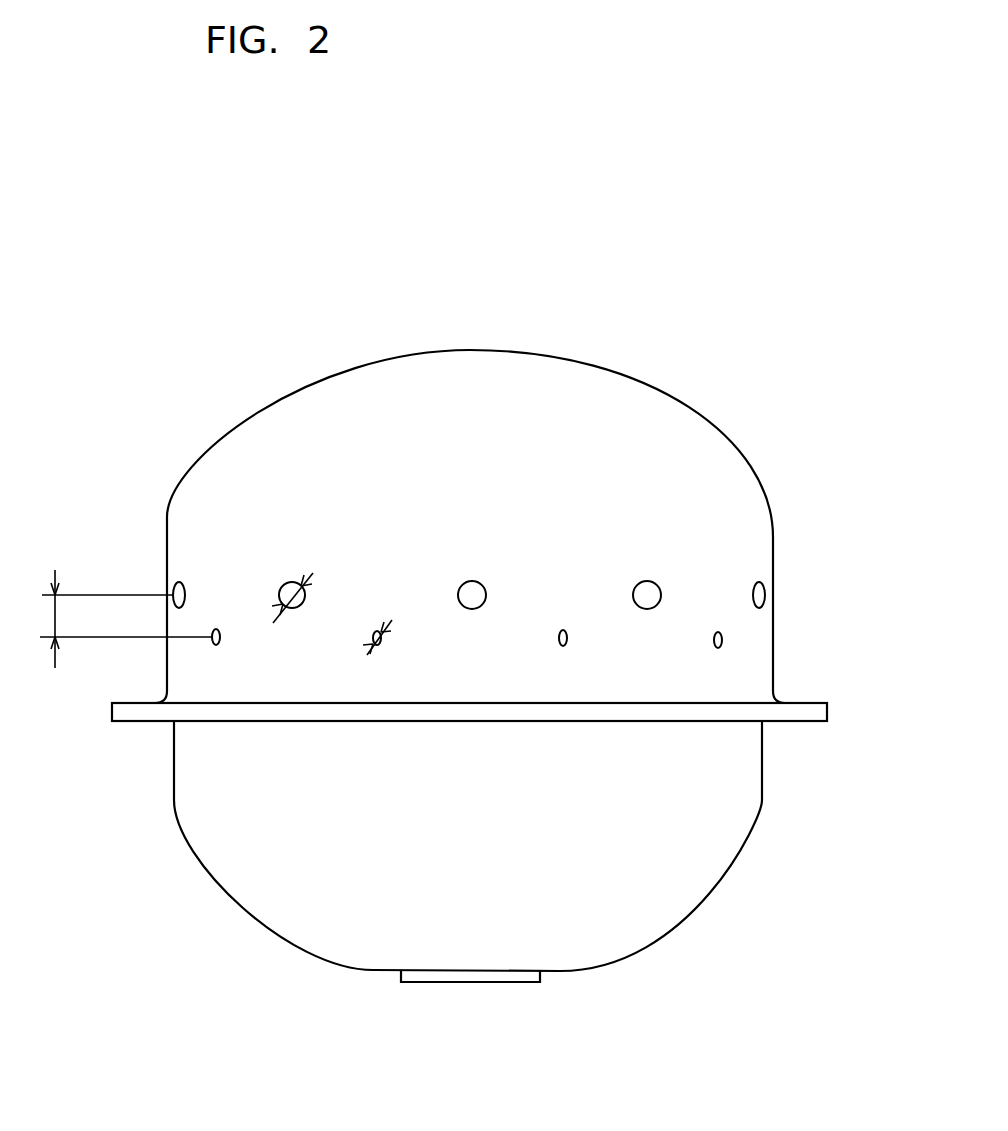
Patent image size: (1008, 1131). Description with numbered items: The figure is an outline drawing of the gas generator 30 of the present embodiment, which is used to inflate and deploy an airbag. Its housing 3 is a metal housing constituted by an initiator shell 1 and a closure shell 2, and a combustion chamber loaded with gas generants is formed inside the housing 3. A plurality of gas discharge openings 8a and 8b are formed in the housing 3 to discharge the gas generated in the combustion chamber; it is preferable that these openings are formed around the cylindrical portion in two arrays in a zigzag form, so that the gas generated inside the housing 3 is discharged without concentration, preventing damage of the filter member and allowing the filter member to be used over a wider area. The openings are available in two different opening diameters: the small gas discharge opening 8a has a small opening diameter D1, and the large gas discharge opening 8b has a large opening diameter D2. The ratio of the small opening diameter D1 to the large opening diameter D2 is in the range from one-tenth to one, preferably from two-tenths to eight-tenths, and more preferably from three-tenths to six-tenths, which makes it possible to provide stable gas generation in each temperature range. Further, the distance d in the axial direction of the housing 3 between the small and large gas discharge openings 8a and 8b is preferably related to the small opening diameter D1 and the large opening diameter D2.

The gas generator 30 is at (570, 232).
The housing 3 is at (685, 387).
The large gas discharge opening 8b is at (765, 582).
The small gas discharge opening 8a is at (722, 639).
The closure shell 2 is at (772, 667).
The initiator shell 1 is at (723, 863).
The small opening diameter D1 is at (398, 615).
The large opening diameter D2 is at (311, 576).
The distance in the axial direction d is at (116, 619).